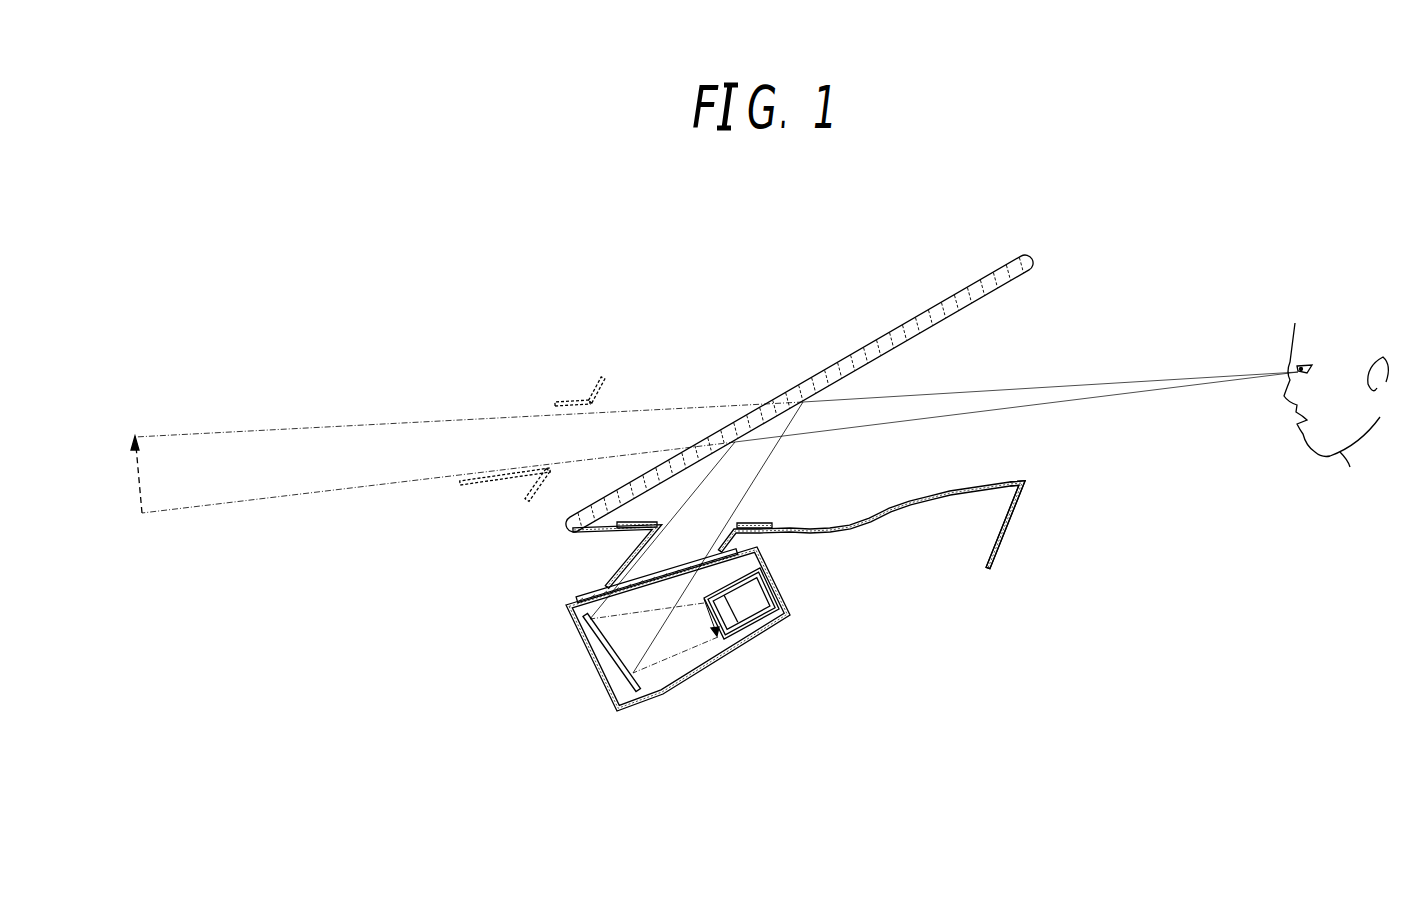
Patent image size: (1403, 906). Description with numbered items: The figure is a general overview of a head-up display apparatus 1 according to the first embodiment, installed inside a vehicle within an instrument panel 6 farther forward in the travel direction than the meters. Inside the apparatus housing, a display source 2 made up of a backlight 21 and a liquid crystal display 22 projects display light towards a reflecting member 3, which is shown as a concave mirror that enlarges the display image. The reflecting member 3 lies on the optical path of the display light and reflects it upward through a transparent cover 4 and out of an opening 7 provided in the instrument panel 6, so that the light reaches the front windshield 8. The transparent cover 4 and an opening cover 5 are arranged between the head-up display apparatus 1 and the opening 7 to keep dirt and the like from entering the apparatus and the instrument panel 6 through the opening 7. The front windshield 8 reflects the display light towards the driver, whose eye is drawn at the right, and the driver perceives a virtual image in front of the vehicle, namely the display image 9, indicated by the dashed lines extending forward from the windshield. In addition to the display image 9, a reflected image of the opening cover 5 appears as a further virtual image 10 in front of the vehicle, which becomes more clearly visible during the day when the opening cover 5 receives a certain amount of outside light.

The head-up display apparatus 1 is at (687, 680).
The display source 2 is at (776, 584).
The backlight 21 is at (754, 615).
The liquid crystal display 22 is at (737, 640).
The reflecting member 3 is at (605, 653).
The transparent cover 4 is at (592, 595).
The opening cover 5 is at (760, 524).
The instrument panel 6 is at (1022, 500).
The opening 7 is at (703, 523).
The front windshield 8 is at (938, 303).
The display image 9 is at (137, 483).
The virtual image 10 is at (497, 478).